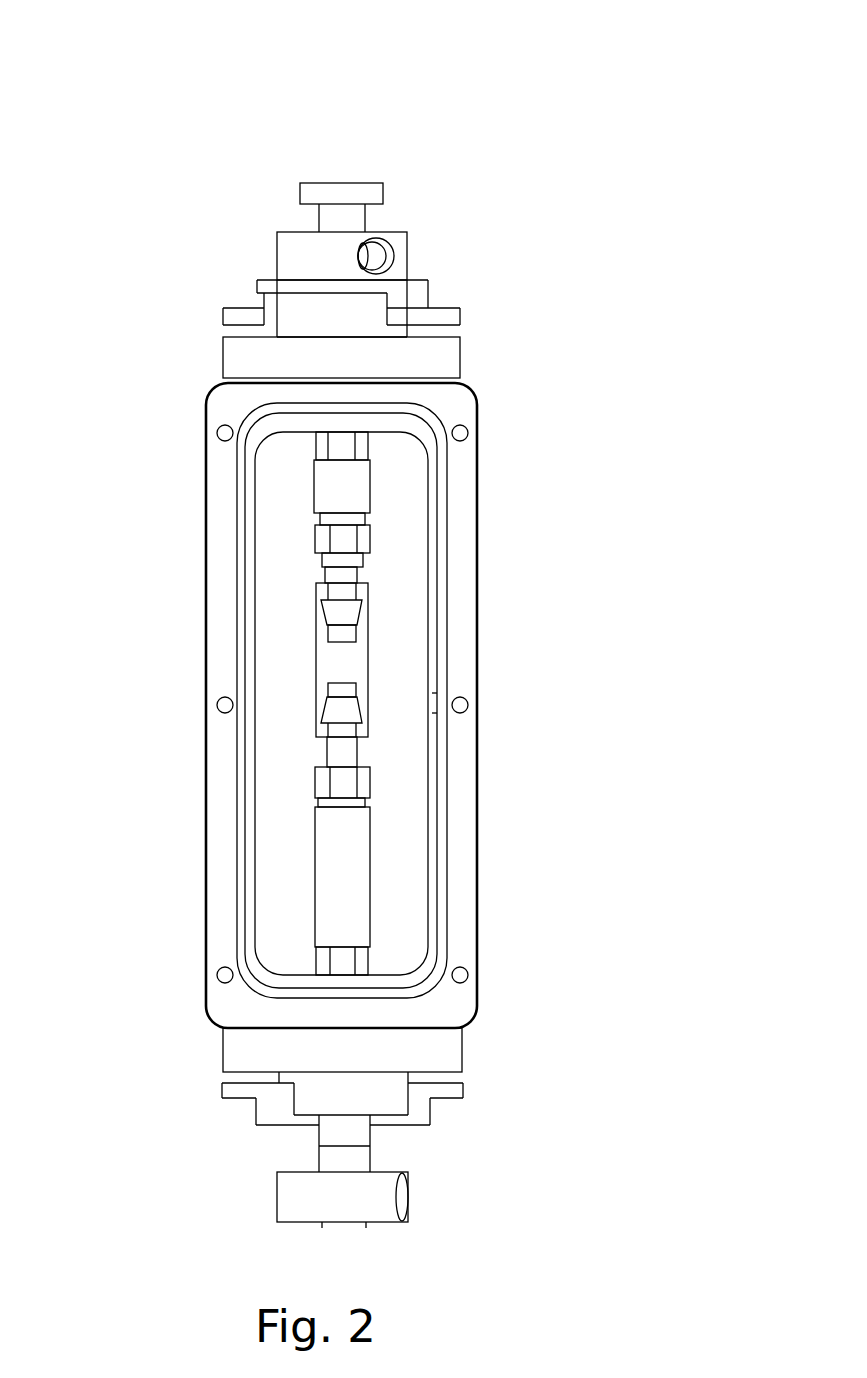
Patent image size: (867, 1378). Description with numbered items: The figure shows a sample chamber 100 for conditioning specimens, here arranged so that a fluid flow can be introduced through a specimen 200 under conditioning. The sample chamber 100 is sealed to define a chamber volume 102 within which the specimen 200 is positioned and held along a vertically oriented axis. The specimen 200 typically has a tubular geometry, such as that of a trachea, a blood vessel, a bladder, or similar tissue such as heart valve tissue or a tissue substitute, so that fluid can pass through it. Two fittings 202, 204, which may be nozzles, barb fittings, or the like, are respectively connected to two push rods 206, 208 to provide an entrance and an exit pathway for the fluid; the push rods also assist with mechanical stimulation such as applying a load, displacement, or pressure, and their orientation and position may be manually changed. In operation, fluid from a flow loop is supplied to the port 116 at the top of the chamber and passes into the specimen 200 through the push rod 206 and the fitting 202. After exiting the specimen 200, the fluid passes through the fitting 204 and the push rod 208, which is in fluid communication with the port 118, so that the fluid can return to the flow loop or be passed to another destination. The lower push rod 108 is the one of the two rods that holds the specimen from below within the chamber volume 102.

The sample chamber 100 is at (692, 55).
The chamber volume 102 is at (278, 895).
The push rod 108 is at (400, 929).
The port 116 is at (403, 258).
The port 118 is at (420, 1195).
The specimen 200 is at (384, 653).
The fitting 202 is at (375, 572).
The fitting 204 is at (374, 752).
The push rod 206 is at (382, 487).
The push rod 208 is at (384, 852).